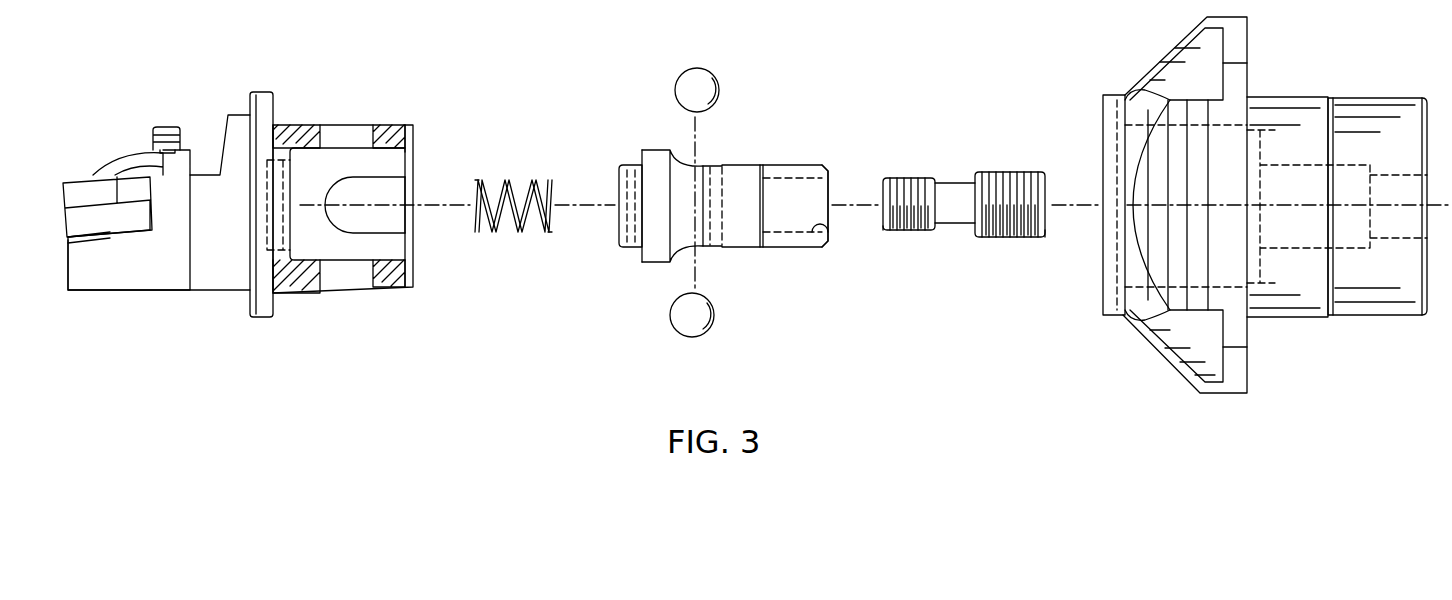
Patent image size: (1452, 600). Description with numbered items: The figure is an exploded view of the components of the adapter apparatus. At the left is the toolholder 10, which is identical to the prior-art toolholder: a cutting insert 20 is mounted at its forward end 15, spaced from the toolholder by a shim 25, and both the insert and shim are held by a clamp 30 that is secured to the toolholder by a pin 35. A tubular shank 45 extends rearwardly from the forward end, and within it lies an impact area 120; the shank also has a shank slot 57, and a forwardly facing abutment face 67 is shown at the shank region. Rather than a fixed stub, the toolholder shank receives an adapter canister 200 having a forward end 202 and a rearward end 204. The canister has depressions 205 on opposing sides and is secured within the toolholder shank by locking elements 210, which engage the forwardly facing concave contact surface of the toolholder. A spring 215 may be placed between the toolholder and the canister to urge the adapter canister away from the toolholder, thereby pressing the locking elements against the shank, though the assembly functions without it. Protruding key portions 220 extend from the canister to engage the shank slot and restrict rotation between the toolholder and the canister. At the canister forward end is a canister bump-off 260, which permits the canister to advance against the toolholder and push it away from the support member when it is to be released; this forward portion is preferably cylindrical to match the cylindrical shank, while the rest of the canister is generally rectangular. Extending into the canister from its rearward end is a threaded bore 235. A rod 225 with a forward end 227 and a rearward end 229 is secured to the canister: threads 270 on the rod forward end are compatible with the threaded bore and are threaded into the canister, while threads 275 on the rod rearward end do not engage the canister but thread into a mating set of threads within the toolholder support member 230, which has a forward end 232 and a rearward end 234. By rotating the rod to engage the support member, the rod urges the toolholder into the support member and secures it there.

The toolholder 10 is at (205, 118).
The forward end 15 is at (122, 273).
The cutting insert 20 is at (82, 188).
The shim 25 is at (88, 227).
The clamp 30 is at (122, 155).
The pin 35 is at (165, 128).
The impact area 120 is at (277, 185).
The forwardly facing abutment face 67 is at (362, 132).
The tubular shank 45 is at (398, 128).
The shank slot 57 is at (377, 192).
The spring 215 is at (523, 182).
The forward end 202 is at (618, 187).
The canister bump-off 260 is at (618, 223).
The depressions 205 is at (705, 167).
The adapter canister 200 is at (710, 179).
The protruding key portions 220 is at (790, 202).
The rearward end 204 is at (833, 185).
The threaded bore 235 is at (827, 223).
The locking elements 210 is at (705, 68).
The rod 225 is at (959, 192).
The threads 270 is at (910, 178).
The threads 275 is at (1018, 172).
The forward end 227 is at (883, 227).
The rearward end 229 is at (1048, 233).
The toolholder support member 230 is at (1237, 202).
The forward end 232 is at (1103, 132).
The rearward end 234 is at (1427, 122).